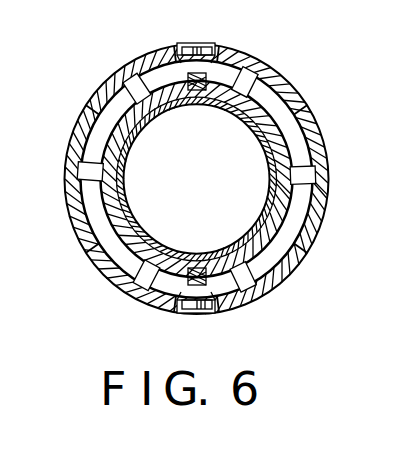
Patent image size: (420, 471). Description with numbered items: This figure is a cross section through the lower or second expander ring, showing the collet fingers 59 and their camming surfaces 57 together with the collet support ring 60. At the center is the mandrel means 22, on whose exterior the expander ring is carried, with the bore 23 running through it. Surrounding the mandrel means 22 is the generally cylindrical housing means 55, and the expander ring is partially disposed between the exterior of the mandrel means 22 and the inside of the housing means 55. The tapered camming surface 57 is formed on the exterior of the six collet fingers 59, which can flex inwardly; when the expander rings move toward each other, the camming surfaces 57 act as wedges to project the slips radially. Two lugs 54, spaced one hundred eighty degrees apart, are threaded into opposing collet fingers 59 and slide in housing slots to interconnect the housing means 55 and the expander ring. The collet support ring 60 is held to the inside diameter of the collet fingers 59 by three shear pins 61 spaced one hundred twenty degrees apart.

The mandrel means 22 is at (124, 276).
The bore 23 is at (213, 207).
The guide lugs 54 is at (203, 43).
The housing means 55 is at (283, 88).
The tapered camming surface 57 is at (297, 118).
The collet fingers 59 is at (120, 102).
The collet support ring 60 is at (104, 120).
The shear pins 61 is at (204, 76).